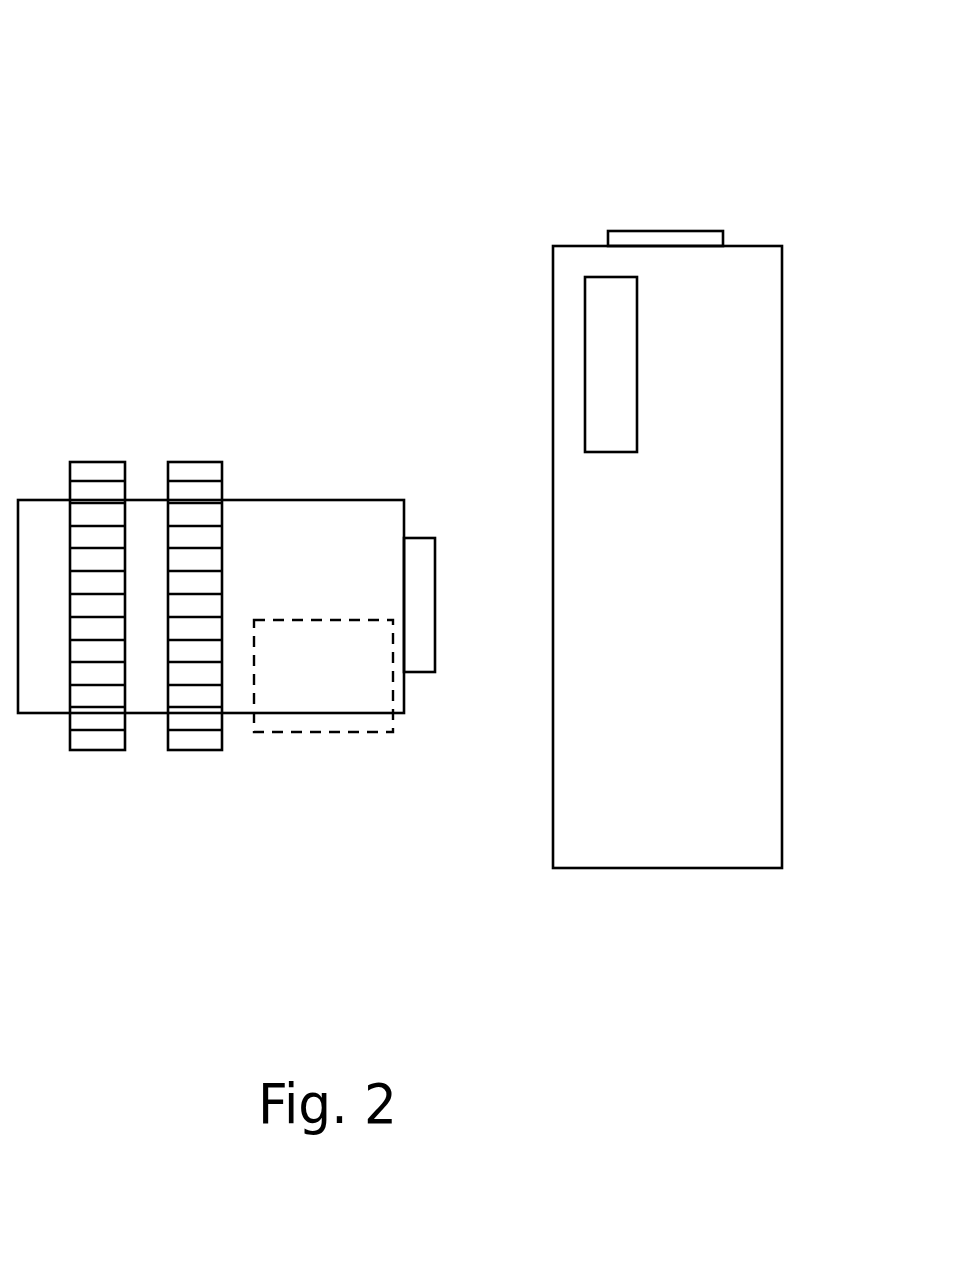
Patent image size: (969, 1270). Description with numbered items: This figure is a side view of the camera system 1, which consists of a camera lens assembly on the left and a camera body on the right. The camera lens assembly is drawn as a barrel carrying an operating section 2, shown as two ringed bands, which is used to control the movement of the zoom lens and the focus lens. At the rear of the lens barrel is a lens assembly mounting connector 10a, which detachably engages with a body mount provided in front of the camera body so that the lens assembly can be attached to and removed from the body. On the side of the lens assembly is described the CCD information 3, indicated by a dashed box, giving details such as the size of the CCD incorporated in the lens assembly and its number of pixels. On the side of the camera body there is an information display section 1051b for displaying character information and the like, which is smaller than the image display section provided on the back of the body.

The camera system 1 is at (677, 135).
The operating section 2 is at (198, 723).
The CCD information 3 is at (338, 737).
The lens assembly mounting connector 10a is at (420, 589).
The information display section 1051b is at (605, 353).